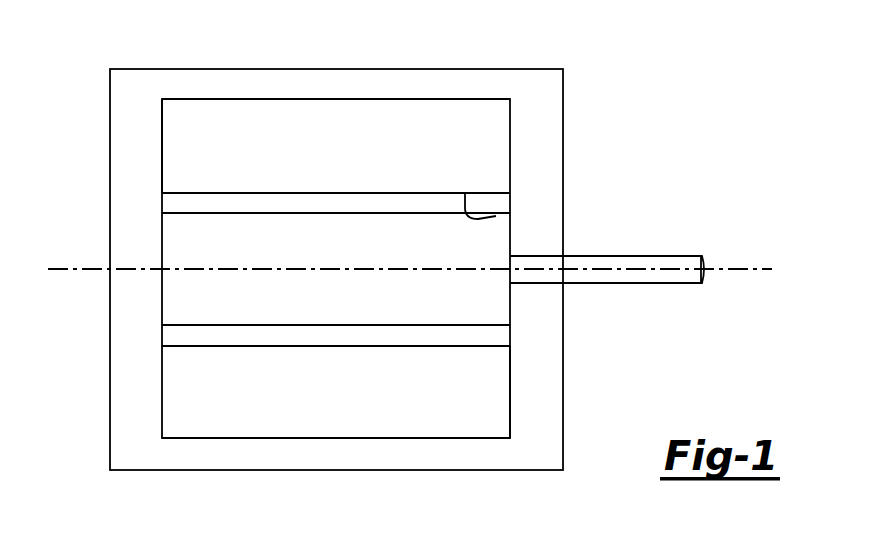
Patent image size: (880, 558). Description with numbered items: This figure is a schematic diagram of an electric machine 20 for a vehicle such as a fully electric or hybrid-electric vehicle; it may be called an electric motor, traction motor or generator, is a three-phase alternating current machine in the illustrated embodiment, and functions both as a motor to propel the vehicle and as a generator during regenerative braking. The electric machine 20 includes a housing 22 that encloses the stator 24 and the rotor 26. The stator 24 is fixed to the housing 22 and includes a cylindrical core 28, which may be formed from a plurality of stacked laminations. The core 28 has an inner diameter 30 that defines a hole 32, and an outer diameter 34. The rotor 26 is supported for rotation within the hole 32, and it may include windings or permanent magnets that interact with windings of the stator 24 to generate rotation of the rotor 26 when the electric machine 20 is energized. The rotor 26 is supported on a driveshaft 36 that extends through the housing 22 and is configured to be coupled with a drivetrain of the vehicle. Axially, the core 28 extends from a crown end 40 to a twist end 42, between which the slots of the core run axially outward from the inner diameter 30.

The electric machine 20 is at (678, 82).
The housing 22 is at (310, 87).
The stator 24 is at (222, 117).
The rotor 26 is at (177, 245).
The cylindrical core 28 is at (490, 150).
The inner diameter 30 is at (478, 219).
The hole 32 is at (524, 334).
The outer diameter 34 is at (222, 440).
The driveshaft 36 is at (655, 255).
The crown end 40 is at (162, 155).
The twist end 42 is at (510, 393).